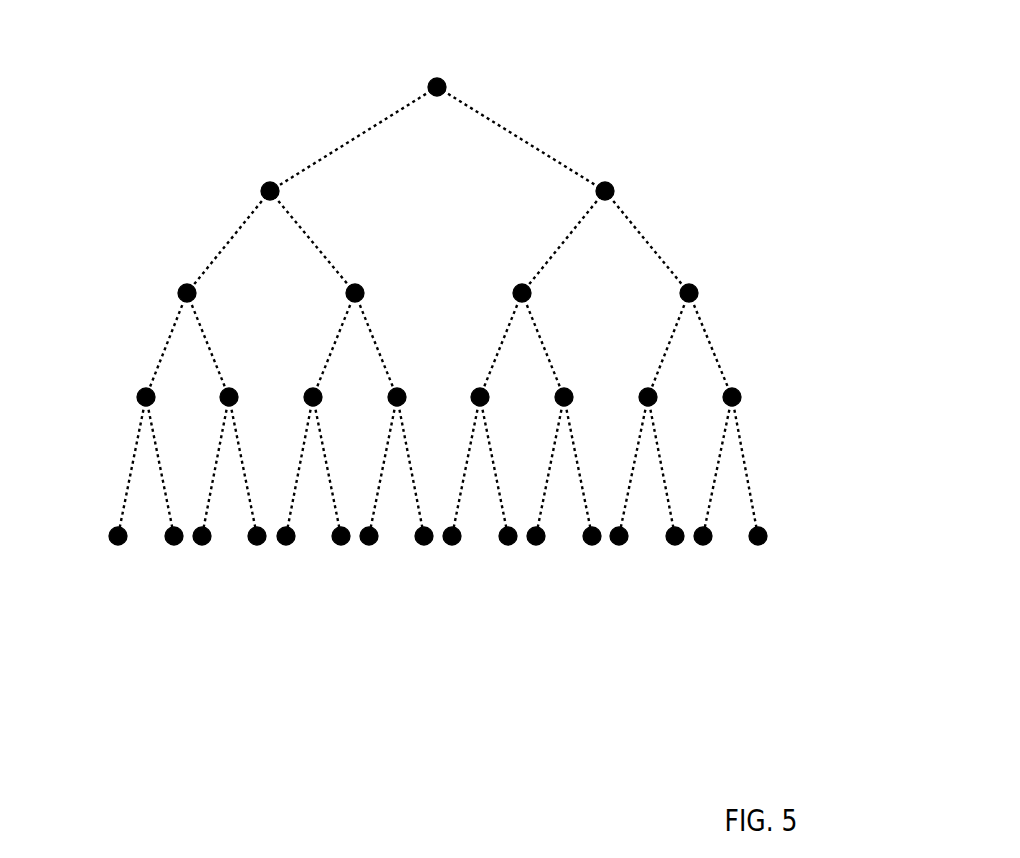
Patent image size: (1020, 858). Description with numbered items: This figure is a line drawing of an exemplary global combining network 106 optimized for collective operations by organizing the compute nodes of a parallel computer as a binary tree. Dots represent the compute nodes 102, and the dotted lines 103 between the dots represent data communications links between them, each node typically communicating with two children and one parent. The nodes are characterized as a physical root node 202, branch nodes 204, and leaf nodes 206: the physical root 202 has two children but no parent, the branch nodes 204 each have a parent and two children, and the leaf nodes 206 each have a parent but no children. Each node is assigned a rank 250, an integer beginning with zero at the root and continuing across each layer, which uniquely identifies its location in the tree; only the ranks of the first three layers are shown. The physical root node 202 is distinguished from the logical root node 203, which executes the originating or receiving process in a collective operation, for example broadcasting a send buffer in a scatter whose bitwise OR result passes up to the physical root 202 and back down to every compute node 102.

The global combining network 106 is at (238, 630).
The data communications links 103 is at (363, 135).
The physical root node 202 is at (453, 78).
The logical root node 203 is at (113, 255).
The branch nodes 204 is at (454, 291).
The leaf nodes 206 is at (778, 570).
The compute nodes 102 is at (508, 545).
The rank 250 is at (570, 200).